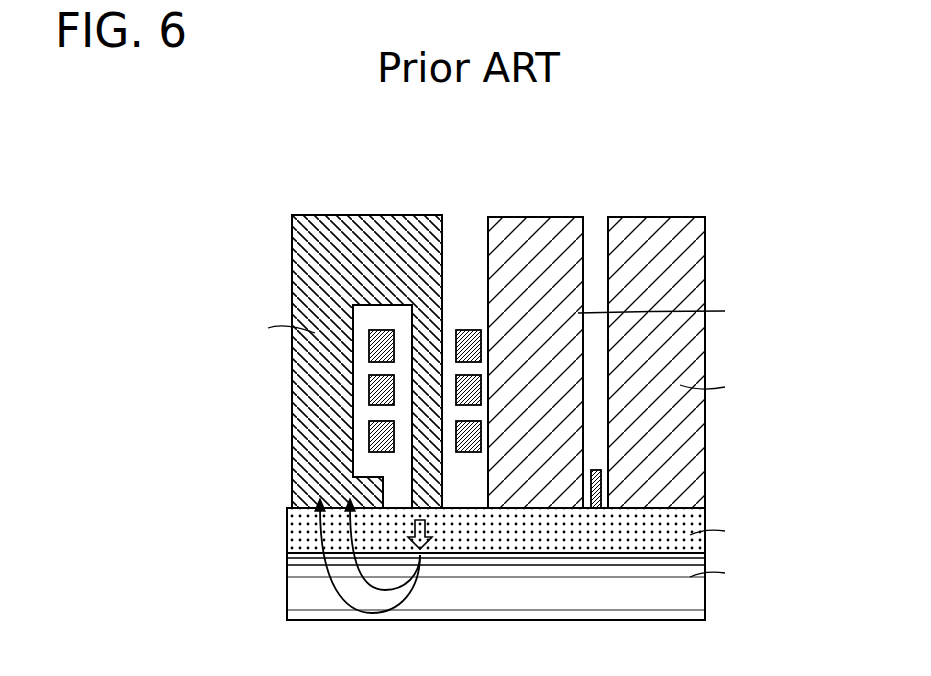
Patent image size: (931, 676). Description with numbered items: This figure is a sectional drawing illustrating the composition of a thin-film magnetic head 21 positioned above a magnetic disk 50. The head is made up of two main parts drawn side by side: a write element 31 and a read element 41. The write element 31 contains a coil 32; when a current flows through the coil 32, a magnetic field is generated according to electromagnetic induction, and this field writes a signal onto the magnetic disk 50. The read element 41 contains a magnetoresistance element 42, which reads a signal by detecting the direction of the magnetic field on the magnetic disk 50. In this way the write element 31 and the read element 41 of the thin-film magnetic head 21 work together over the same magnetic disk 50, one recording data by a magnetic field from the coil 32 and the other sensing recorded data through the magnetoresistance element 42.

The thin-film magnetic head 21 is at (280, 215).
The write element 31 is at (467, 173).
The coil 32 is at (381, 330).
The read element 41 is at (705, 173).
The magnetoresistance element 42 is at (600, 482).
The magnetic disk 50 is at (280, 617).